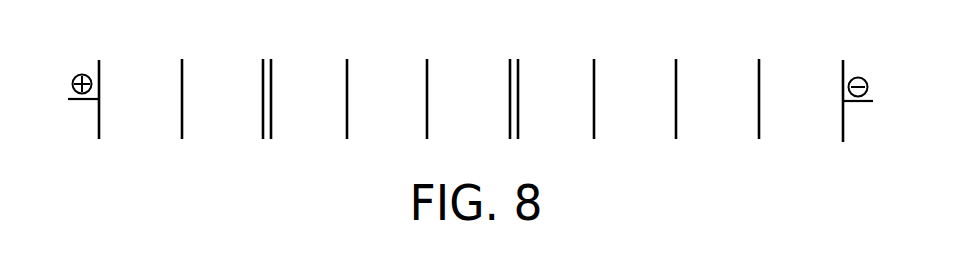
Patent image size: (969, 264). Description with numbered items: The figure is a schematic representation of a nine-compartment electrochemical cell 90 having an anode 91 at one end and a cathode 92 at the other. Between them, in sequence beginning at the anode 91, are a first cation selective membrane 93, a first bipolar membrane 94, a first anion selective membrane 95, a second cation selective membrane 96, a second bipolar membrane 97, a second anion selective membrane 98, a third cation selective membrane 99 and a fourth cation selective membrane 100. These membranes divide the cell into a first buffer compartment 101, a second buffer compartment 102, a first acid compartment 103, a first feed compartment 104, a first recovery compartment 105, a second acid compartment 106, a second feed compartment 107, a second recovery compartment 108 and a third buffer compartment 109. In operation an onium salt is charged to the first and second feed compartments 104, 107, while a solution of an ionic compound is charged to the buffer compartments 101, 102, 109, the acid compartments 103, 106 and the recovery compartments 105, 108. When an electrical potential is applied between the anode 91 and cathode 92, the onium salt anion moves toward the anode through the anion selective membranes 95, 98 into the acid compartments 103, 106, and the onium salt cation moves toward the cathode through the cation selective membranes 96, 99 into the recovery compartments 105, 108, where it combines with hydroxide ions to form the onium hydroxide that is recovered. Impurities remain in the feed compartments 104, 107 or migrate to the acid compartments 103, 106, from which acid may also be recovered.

The electrochemical cell 90 is at (872, 51).
The anode 91 is at (86, 86).
The cathode 92 is at (854, 87).
The first cation selective membrane 93 is at (182, 100).
The first bipolar membrane 94 is at (265, 100).
The first anion selective membrane 95 is at (347, 100).
The second cation selective membrane 96 is at (427, 100).
The second bipolar membrane 97 is at (513, 100).
The second anion selective membrane 98 is at (594, 100).
The third cation selective membrane 99 is at (676, 100).
The fourth cation selective membrane 100 is at (759, 100).
The first buffer compartment 101 is at (137, 99).
The second buffer compartment 102 is at (222, 99).
The first acid compartment 103 is at (308, 99).
The first feed compartment 104 is at (388, 99).
The first recovery compartment 105 is at (472, 99).
The second acid compartment 106 is at (555, 99).
The second feed compartment 107 is at (637, 99).
The second recovery compartment 108 is at (720, 99).
The third buffer compartment 109 is at (807, 99).